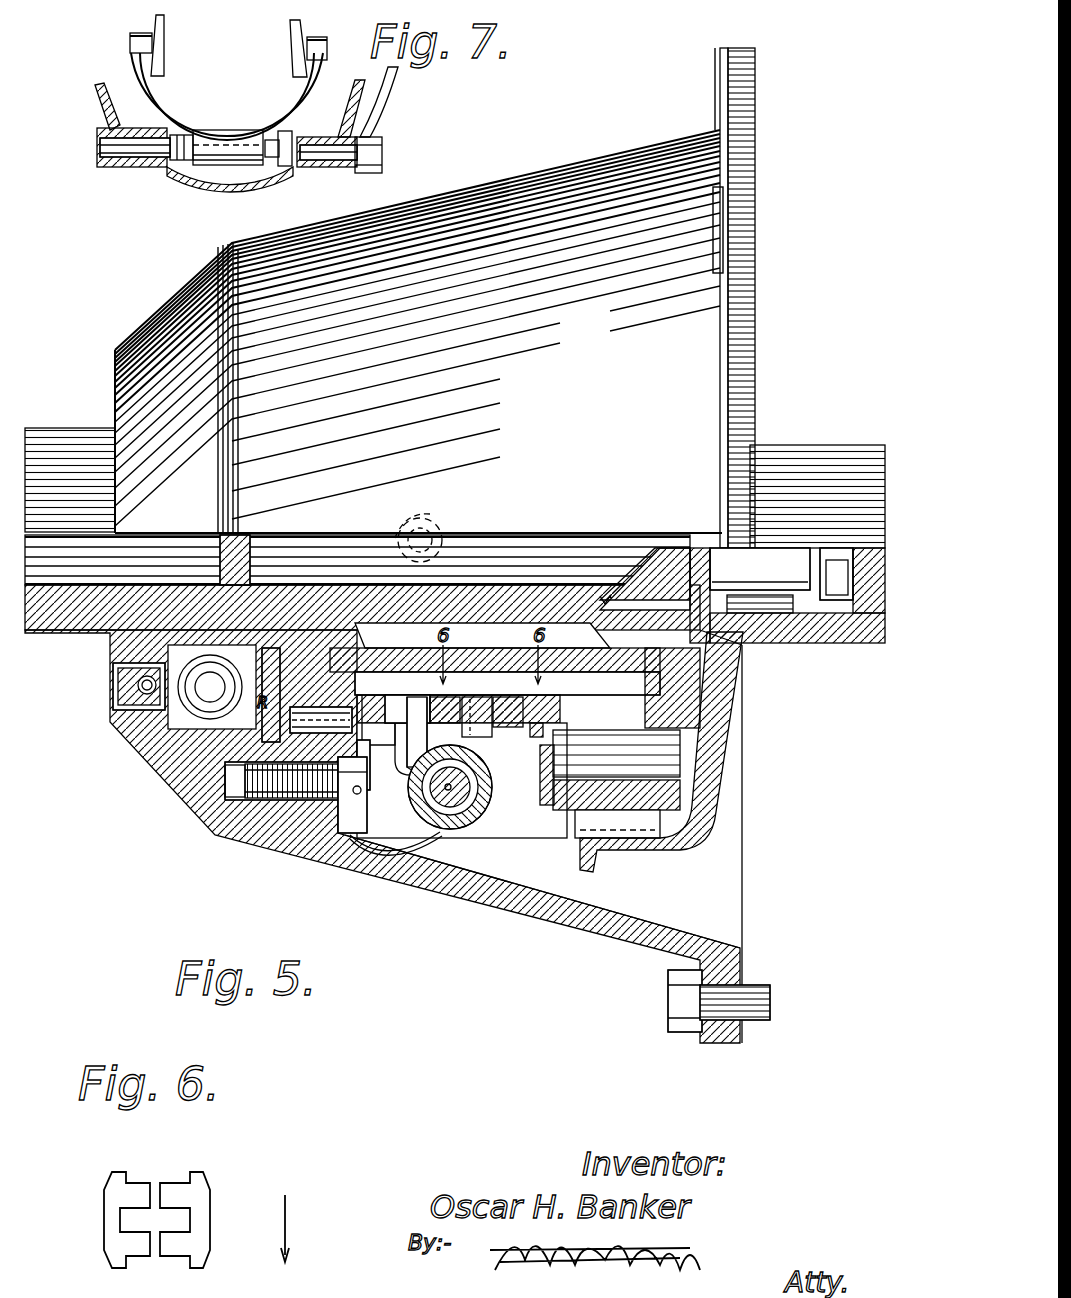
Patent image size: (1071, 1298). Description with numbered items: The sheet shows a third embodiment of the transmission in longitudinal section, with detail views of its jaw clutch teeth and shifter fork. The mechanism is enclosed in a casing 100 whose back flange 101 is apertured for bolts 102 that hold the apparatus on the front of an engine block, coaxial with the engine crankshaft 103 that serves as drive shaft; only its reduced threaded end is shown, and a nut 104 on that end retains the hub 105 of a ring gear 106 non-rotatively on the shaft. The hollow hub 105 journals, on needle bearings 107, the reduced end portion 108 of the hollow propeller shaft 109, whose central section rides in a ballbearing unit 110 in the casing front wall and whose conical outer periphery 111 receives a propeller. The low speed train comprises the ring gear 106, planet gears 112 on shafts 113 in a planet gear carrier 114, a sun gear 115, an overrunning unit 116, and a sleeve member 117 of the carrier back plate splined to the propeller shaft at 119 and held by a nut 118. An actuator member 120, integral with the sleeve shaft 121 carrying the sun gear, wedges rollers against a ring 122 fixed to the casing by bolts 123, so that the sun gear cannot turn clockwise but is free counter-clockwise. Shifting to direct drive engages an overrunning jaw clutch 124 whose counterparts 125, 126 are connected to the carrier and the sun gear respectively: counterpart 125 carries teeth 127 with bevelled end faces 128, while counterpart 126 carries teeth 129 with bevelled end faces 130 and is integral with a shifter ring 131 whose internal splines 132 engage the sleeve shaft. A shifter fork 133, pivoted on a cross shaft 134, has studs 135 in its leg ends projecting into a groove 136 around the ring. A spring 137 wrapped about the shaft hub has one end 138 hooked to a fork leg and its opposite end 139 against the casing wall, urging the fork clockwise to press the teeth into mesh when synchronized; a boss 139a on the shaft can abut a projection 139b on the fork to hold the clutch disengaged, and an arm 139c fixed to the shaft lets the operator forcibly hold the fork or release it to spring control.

In FIG. 5, the casing 100 is at (468, 880).
In FIG. 5, the flange 101 is at (706, 1035).
In FIG. 5, the bolts 102 is at (668, 1003).
In FIG. 5, the engine crankshaft 103 is at (876, 445).
In FIG. 5, the nut 104 is at (865, 613).
In FIG. 5, the hub 105 is at (830, 600).
In FIG. 5, the ring gear 106 is at (612, 850).
In FIG. 5, the needle bearings 107 is at (765, 613).
In FIG. 5, the reduced end portion 108 is at (760, 569).
In FIG. 5, the propeller shaft 109 is at (56, 632).
In FIG. 5, the ballbearing unit 110 is at (182, 737).
In FIG. 5, the outer periphery 111 is at (66, 428).
In FIG. 5, the planet gears 112 is at (590, 802).
In FIG. 5, the shafts 113 is at (680, 763).
In FIG. 5, the planet gear carrier 114 is at (548, 800).
In FIG. 5, the sun gear 115 is at (617, 685).
In FIG. 5, the overrunning unit 116 is at (362, 752).
In FIG. 5, the sleeve member 117 is at (495, 647).
In FIG. 5, the nut 118 is at (640, 598).
In FIG. 5, the splines 119 is at (575, 600).
In FIG. 5, the actuator member 120 is at (379, 720).
In FIG. 5, the sleeve shaft 121 is at (507, 683).
In FIG. 5, the ring 122 is at (295, 790).
In FIG. 5, the bolts 123 is at (350, 815).
In FIG. 5, the overrunning jaw clutch 124 is at (492, 740).
In FIG. 5, the clutch counterpart 125 is at (498, 733).
In FIG. 6, the clutch counterpart 125 is at (206, 1220).
In FIG. 5, the clutch counterpart 126 is at (456, 710).
In FIG. 6, the clutch counterpart 126 is at (120, 1212).
In FIG. 6, the teeth 127 is at (170, 1196).
In FIG. 6, the bevelled end faces 128 is at (155, 1185).
In FIG. 6, the teeth 129 is at (128, 1196).
In FIG. 6, the bevelled end faces 130 is at (140, 1185).
In FIG. 5, the shifter ring 131 is at (392, 749).
In FIG. 5, the internal splines 132 is at (458, 673).
In FIG. 5, the shifter fork 133 is at (395, 537).
In FIG. 7, the shifter fork 133 is at (170, 108).
In FIG. 5, the cross shaft 134 is at (466, 812).
In FIG. 7, the cross shaft 134 is at (338, 160).
In FIG. 5, the pivotal studs 135 is at (428, 520).
In FIG. 7, the pivotal studs 135 is at (130, 42).
In FIG. 5, the groove 136 is at (433, 734).
In FIG. 5, the spring 137 is at (440, 836).
In FIG. 7, the spring 137 is at (182, 175).
In FIG. 5, the spring end 138 is at (407, 699).
In FIG. 7, the spring end 138 is at (185, 140).
In FIG. 5, the spring end 139 is at (372, 850).
In FIG. 7, the spring end 139 is at (172, 170).
In FIG. 7, the boss 139a is at (286, 166).
In FIG. 7, the projection 139b is at (297, 137).
In FIG. 7, the arm 139c is at (385, 105).